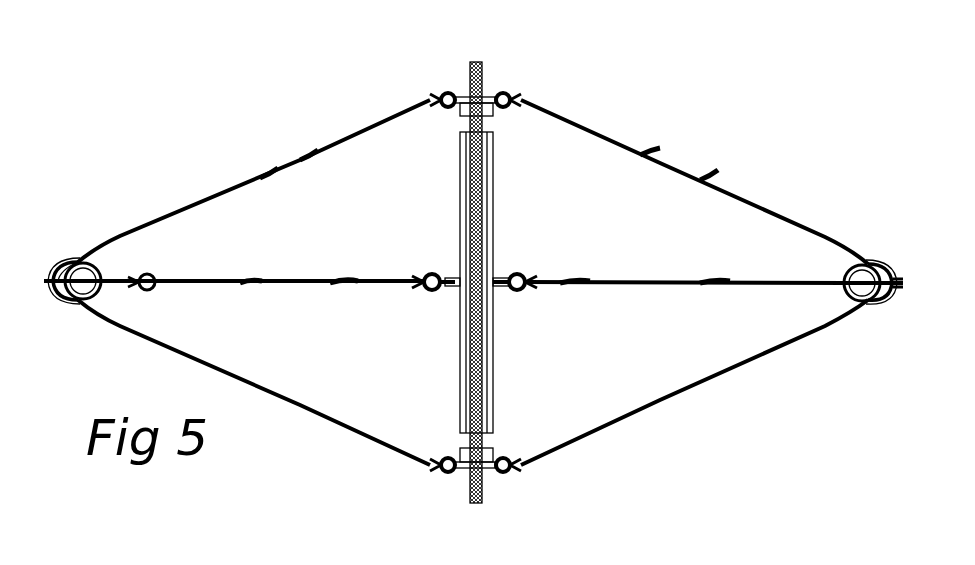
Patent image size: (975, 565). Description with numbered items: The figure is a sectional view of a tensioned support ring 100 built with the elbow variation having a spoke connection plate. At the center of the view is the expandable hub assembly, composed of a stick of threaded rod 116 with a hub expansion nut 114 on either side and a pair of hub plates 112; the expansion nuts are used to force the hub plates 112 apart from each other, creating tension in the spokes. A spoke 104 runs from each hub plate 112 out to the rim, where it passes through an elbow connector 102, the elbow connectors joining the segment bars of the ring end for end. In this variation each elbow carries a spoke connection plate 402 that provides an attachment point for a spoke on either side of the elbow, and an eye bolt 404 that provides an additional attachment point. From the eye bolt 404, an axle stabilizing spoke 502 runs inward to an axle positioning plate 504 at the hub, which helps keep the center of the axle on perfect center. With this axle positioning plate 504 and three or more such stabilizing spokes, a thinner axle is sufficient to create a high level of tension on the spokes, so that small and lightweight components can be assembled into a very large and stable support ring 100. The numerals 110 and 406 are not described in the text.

The support ring 100 is at (688, 117).
The elbow connector 102 is at (100, 266).
The spoke 104 is at (284, 160).
The sleeve 110 is at (494, 196).
The hub plate 112 is at (486, 98).
The hub expansion nut 114 is at (460, 110).
The threaded rod 116 is at (470, 66).
The spoke connection plate 402 is at (88, 262).
The eye bolt 404 is at (152, 290).
The cable end 406 is at (46, 280).
The axle stabilizing spoke 502 is at (286, 280).
The axle positioning plate 504 is at (498, 288).